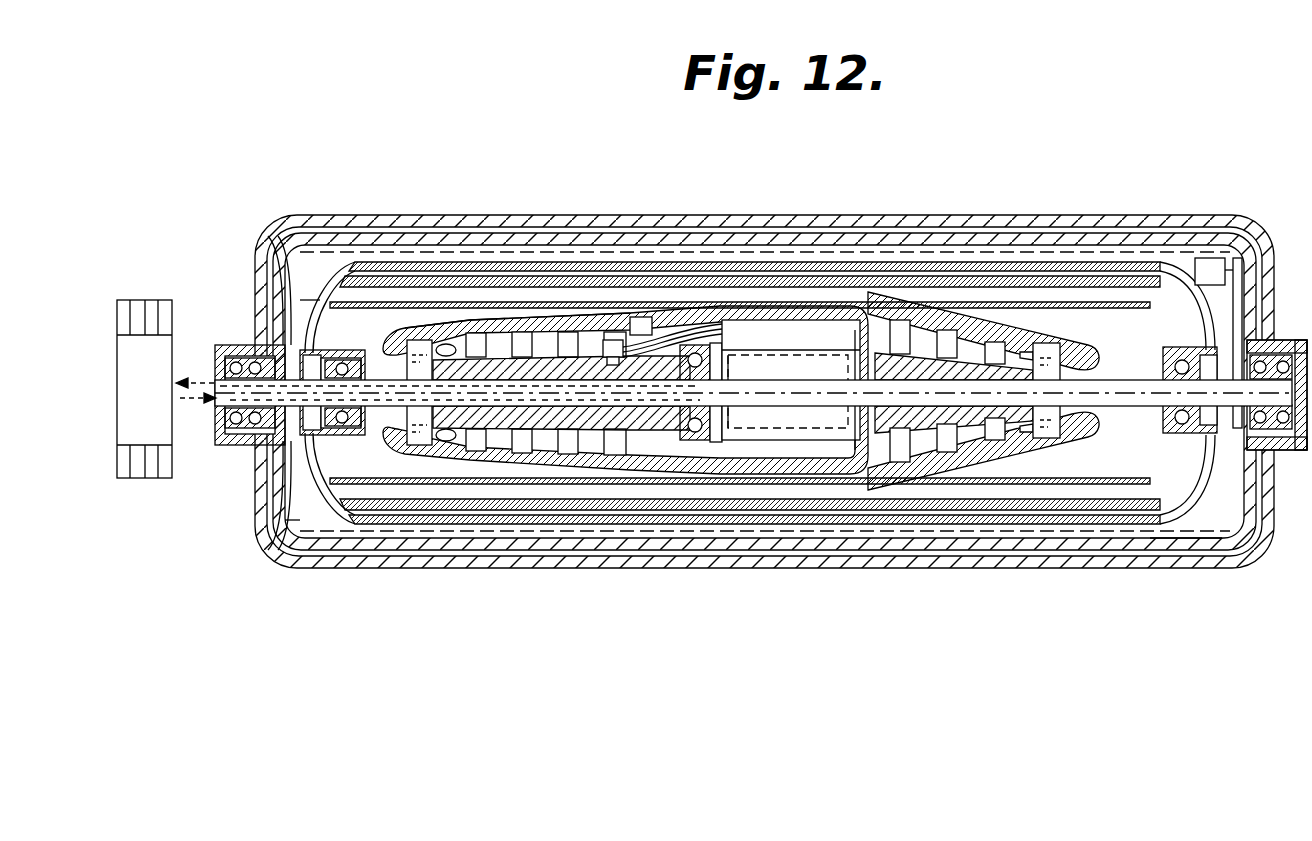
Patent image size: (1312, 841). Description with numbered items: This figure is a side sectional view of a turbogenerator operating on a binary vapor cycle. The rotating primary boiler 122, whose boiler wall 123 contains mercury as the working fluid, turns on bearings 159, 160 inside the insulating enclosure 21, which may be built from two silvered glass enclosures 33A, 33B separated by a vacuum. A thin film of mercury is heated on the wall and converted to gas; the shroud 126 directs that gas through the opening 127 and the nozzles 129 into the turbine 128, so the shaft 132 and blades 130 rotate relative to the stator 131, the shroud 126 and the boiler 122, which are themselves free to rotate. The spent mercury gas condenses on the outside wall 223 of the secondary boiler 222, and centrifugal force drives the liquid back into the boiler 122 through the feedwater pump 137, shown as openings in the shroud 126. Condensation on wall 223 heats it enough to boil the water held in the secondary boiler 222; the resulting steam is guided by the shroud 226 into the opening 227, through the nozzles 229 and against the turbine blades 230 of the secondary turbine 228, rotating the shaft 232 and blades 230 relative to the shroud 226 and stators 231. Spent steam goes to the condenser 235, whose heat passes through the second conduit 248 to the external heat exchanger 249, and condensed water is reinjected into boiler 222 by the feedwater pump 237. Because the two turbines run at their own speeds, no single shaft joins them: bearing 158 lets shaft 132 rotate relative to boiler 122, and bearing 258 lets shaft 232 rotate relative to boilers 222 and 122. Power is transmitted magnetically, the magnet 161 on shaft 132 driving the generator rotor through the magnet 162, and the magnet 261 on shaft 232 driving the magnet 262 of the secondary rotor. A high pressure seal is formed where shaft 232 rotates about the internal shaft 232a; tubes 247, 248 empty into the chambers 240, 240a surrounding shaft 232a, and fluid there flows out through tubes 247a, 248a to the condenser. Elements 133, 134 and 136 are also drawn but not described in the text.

The enclosure 21 is at (770, 216).
The boiler 122 is at (912, 258).
The boiler wall 123 is at (1034, 260).
The shroud 126 is at (966, 294).
The opening 127 is at (1094, 366).
The turbine 128 is at (1000, 442).
The nozzles 129 is at (1030, 355).
The blades 130 is at (945, 455).
The stator 131 is at (905, 465).
The shaft 132 is at (1077, 395).
The end plate 133 is at (1197, 262).
The stator mount 134 is at (827, 352).
The sensor 136 is at (1236, 258).
The feedwater pump 137 is at (383, 275).
The bearing 158 is at (1183, 438).
The bearing 159 is at (1250, 425).
The bearing 160 is at (234, 437).
The magnet 161 is at (878, 440).
The magnet 162 is at (846, 410).
The secondary boiler 222 is at (385, 512).
The outside wall 223 is at (648, 490).
The shroud 226 is at (464, 465).
The opening 227 is at (398, 424).
The turbine 228 is at (474, 325).
The nozzles 229 is at (438, 345).
The turbine blades 230 is at (523, 442).
The stators 231 is at (548, 332).
The shaft 232 is at (653, 393).
The internal shaft 232a is at (212, 392).
The condenser 235 is at (760, 452).
The feedwater pump 237 is at (640, 316).
The chamber 240 is at (270, 224).
The chamber 240a is at (400, 490).
The tube 247 is at (662, 345).
The tube 247a is at (290, 528).
The second conduit 248 is at (688, 322).
The tube 248a is at (278, 302).
The external heat exchanger 249 is at (135, 480).
The bearing 258 is at (290, 330).
The magnet 261 is at (718, 340).
The magnet 262 is at (733, 372).
The glass enclosure 33A is at (1278, 552).
The glass enclosure 33B is at (1237, 535).